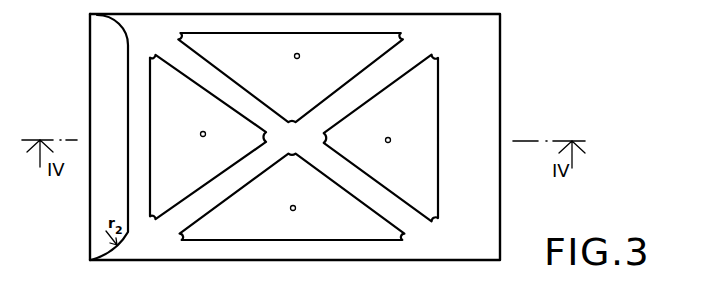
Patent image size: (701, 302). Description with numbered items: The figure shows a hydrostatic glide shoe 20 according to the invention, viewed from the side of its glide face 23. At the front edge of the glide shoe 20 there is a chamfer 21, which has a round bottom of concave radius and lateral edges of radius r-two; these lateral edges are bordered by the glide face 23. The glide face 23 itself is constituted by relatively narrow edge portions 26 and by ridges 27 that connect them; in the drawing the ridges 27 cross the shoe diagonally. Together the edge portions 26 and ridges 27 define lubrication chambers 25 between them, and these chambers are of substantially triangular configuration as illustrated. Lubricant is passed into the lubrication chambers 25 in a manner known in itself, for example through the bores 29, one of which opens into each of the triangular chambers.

The hydrostatic glide shoe 20 is at (168, 157).
The chamfer 21 is at (90, 211).
The glide face 23 is at (370, 78).
The lubrication chambers 25 is at (157, 99).
The edge portions 26 is at (133, 60).
The ridges 27 is at (326, 105).
The bores 29 is at (294, 56).